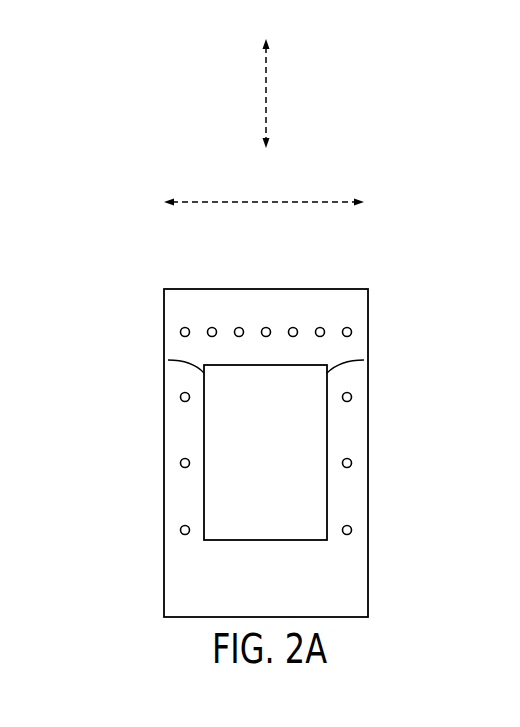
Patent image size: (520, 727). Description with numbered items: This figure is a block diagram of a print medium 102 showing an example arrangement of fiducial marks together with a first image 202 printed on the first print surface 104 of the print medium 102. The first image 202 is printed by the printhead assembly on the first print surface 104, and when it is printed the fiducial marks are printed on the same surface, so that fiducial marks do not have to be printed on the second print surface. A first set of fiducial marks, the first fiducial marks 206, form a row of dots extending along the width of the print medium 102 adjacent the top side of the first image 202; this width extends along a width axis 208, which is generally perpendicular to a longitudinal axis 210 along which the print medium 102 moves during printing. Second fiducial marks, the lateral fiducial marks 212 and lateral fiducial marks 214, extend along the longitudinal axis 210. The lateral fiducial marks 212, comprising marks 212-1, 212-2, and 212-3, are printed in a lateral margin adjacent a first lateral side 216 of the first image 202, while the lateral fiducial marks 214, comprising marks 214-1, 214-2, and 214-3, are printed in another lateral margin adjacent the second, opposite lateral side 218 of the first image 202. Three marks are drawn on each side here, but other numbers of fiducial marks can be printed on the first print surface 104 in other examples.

The print medium 102 is at (306, 453).
The first print surface 104 is at (352, 597).
The first image 202 is at (222, 541).
The first fiducial marks 206 is at (358, 318).
The width axis 208 is at (222, 202).
The longitudinal axis 210 is at (266, 92).
The lateral fiducial marks 212 is at (114, 464).
The lateral fiducial mark 212-1 is at (181, 400).
The lateral fiducial mark 212-2 is at (181, 460).
The lateral fiducial mark 212-3 is at (143, 521).
The lateral fiducial marks 214 is at (419, 464).
The lateral fiducial mark 214-1 is at (351, 400).
The lateral fiducial mark 214-2 is at (351, 460).
The lateral fiducial mark 214-3 is at (388, 521).
The left edge curve 216 is at (168, 360).
The second lateral side 218 is at (364, 360).